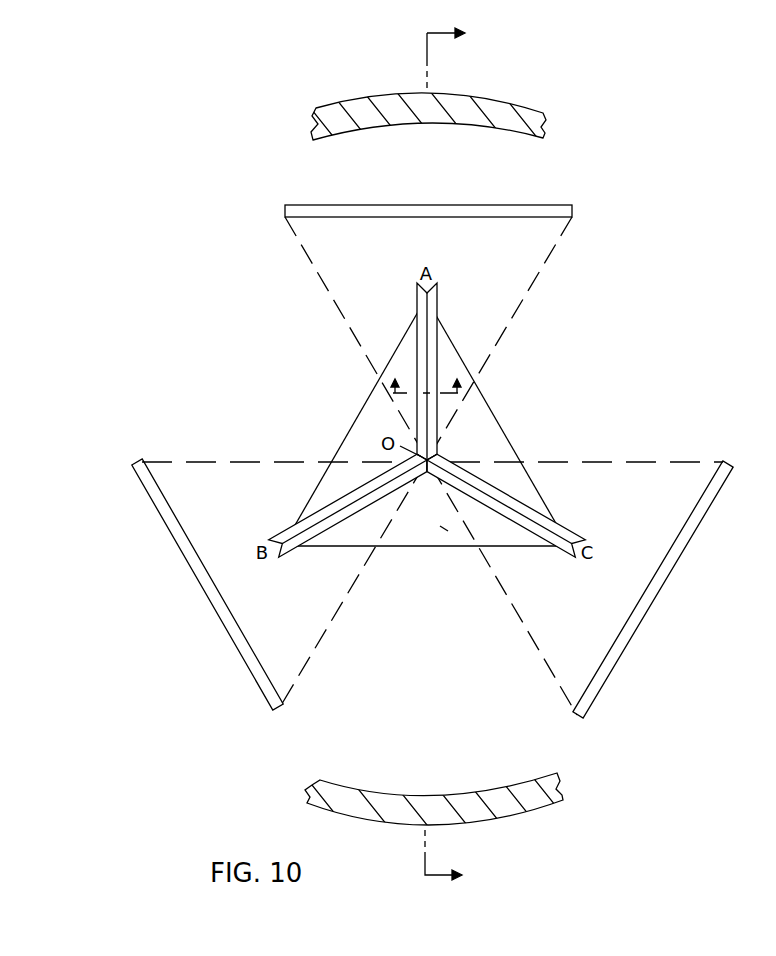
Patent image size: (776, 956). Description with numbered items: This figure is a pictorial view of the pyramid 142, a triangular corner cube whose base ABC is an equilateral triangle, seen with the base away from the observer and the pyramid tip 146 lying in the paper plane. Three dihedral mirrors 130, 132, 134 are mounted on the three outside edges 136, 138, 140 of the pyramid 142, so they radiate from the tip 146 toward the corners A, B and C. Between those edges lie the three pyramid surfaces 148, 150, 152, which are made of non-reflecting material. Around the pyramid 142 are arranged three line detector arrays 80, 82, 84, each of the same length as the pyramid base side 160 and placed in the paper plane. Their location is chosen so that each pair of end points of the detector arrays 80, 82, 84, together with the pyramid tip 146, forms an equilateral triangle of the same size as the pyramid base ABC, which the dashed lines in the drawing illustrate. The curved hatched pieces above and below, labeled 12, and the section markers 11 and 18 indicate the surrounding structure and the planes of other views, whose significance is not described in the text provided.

The section line 11- 11 is at (457, 456).
The cylindrical casing wall 12 is at (484, 106).
The section line 18- 18 is at (427, 376).
The line detector array 80 is at (513, 206).
The line detector array 82 is at (189, 568).
The line detector array 84 is at (653, 604).
The dihedral mirror 130 is at (453, 371).
The dihedral mirror 132 is at (348, 516).
The dihedral mirror 134 is at (506, 516).
The outside edge 136 is at (430, 422).
The outside edge 138 is at (368, 500).
The outside edge 140 is at (493, 503).
The pyramid 142 is at (435, 438).
The pyramid tip 146 is at (424, 468).
The pyramid surface 148 is at (444, 530).
The pyramid surface 150 is at (501, 444).
The pyramid surface 152 is at (370, 415).
The pyramid base side 160 is at (431, 546).